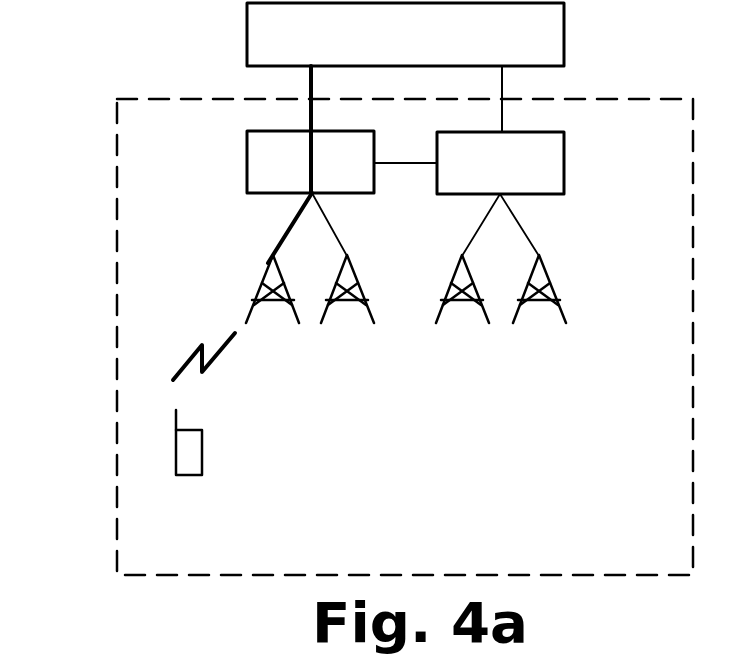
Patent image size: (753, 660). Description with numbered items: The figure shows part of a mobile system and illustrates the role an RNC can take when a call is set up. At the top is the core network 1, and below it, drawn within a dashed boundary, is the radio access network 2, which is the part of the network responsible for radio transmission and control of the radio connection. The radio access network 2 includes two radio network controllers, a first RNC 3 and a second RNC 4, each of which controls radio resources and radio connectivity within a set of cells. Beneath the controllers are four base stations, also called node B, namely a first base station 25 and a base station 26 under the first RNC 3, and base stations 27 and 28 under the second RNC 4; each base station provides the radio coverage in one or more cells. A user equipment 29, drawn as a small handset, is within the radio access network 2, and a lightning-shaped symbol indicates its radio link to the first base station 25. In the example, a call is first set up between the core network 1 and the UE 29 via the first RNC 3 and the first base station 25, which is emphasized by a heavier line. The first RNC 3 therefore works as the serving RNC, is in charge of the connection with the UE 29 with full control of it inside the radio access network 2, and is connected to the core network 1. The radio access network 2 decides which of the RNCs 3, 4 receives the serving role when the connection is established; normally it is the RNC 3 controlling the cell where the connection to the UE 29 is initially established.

The core network 1 is at (247, 33).
The radio access network 2 is at (117, 143).
The first radio network controller 3 is at (248, 160).
The second radio network controller 4 is at (564, 160).
The first base station 25 is at (273, 257).
The base station 26 is at (326, 322).
The base station 27 is at (437, 321).
The base station 28 is at (564, 321).
The user equipment 29 is at (202, 474).